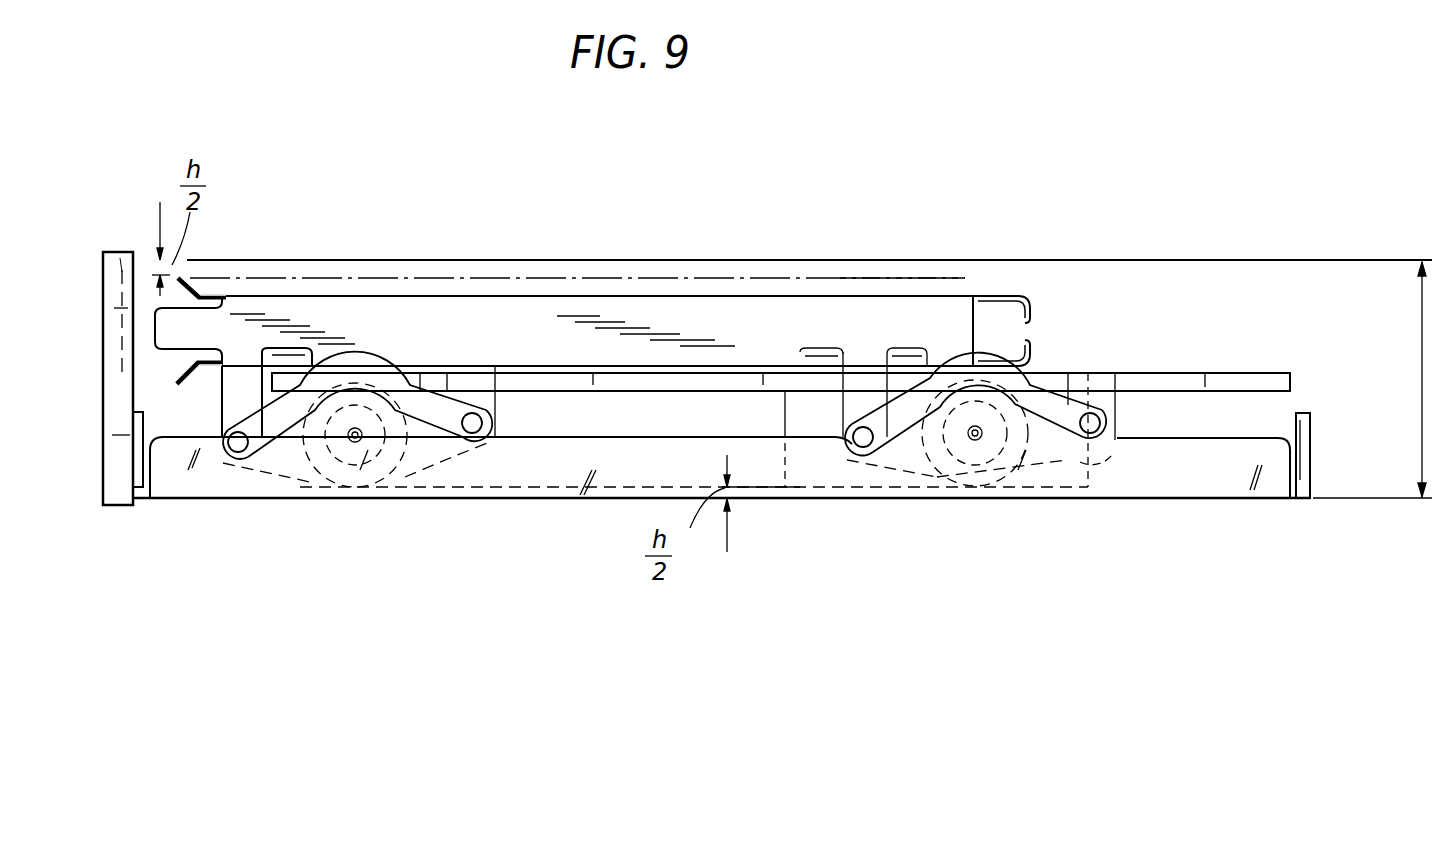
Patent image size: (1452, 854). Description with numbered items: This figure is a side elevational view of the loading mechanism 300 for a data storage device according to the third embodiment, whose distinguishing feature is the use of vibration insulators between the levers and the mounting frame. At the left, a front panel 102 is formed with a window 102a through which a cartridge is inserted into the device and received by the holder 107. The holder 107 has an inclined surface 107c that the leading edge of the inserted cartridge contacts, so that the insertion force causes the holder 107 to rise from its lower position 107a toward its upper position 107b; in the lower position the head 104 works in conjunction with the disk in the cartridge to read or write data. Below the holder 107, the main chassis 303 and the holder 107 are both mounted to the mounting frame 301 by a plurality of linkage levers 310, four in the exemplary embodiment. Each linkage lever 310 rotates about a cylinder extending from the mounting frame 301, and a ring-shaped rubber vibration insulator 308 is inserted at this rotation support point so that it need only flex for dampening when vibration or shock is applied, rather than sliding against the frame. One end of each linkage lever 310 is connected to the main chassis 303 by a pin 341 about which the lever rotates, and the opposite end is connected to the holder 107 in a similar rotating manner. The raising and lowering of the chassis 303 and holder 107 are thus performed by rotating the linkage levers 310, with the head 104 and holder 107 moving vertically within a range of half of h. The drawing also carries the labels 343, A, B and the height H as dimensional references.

The front panel 102 is at (113, 508).
The window 102a is at (124, 272).
The head 104 is at (817, 497).
The holder 107 is at (378, 295).
The lower position 107a is at (597, 295).
The upper position 107b is at (908, 278).
The inclined surface 107c is at (195, 278).
The loading mechanism 300 is at (507, 238).
The mounting frame 301 is at (592, 499).
The main chassis 303 is at (1227, 373).
The rubber vibration insulator 308 is at (937, 480).
The linkage lever 310 is at (407, 478).
The pin 341 is at (470, 432).
The pivot arm 343 is at (232, 455).
The upper reference plane A is at (1039, 259).
The lower reference plane B is at (1148, 499).
The height H is at (1372, 380).